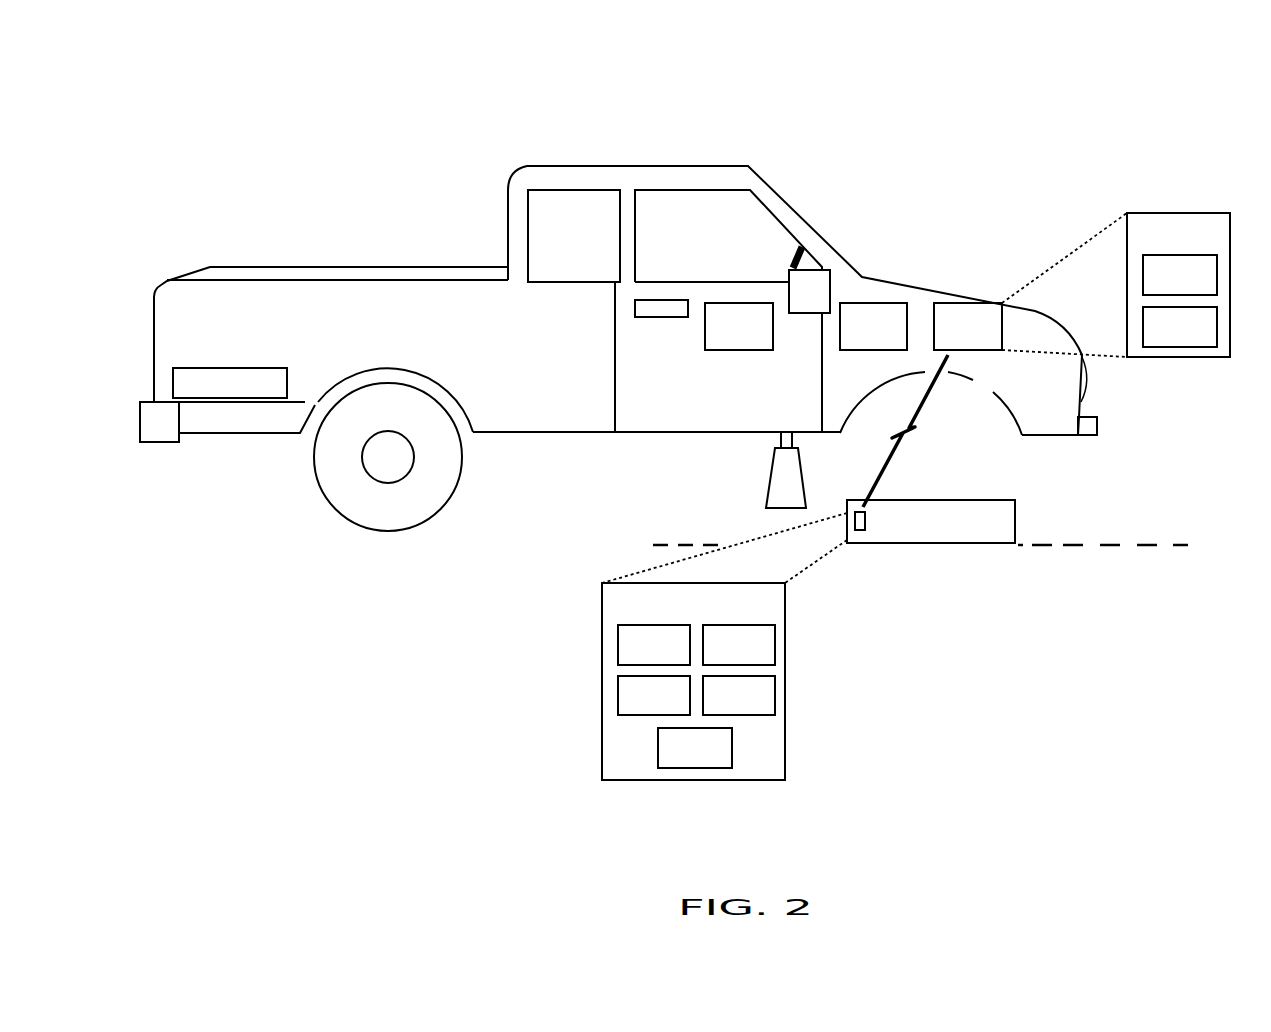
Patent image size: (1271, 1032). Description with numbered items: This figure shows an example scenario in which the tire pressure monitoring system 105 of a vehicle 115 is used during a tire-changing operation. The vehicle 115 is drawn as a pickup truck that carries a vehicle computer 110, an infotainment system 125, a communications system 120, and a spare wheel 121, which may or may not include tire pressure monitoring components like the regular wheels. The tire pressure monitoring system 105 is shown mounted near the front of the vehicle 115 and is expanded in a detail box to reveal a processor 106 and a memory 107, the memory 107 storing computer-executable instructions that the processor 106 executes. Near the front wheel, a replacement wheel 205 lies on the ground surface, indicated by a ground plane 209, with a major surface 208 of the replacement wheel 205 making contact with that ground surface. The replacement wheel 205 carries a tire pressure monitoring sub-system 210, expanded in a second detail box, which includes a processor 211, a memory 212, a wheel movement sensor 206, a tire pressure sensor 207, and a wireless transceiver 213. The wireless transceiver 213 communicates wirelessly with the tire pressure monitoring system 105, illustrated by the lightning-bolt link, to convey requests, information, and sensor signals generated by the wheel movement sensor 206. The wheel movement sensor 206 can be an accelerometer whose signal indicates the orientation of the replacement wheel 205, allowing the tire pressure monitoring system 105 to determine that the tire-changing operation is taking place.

The vehicle 115 is at (500, 103).
The spare wheel 121 is at (243, 368).
The communications system 120 is at (720, 339).
The vehicle computer 110 is at (854, 339).
The infotainment system 125 is at (787, 263).
The tire pressure monitoring system 105 is at (949, 339).
The processor 106 is at (1161, 285).
The memory 107 is at (1161, 337).
The replacement wheel 205 is at (1036, 501).
The tire pressure monitoring sub-system 210 is at (865, 521).
The processor 211 is at (635, 655).
The memory 212 is at (720, 655).
The wheel movement sensor 206 is at (635, 705).
The tire pressure sensor 207 is at (720, 705).
The wireless transceiver 213 is at (676, 758).
The major surface 208 is at (973, 552).
The ground plane 209 is at (1070, 548).